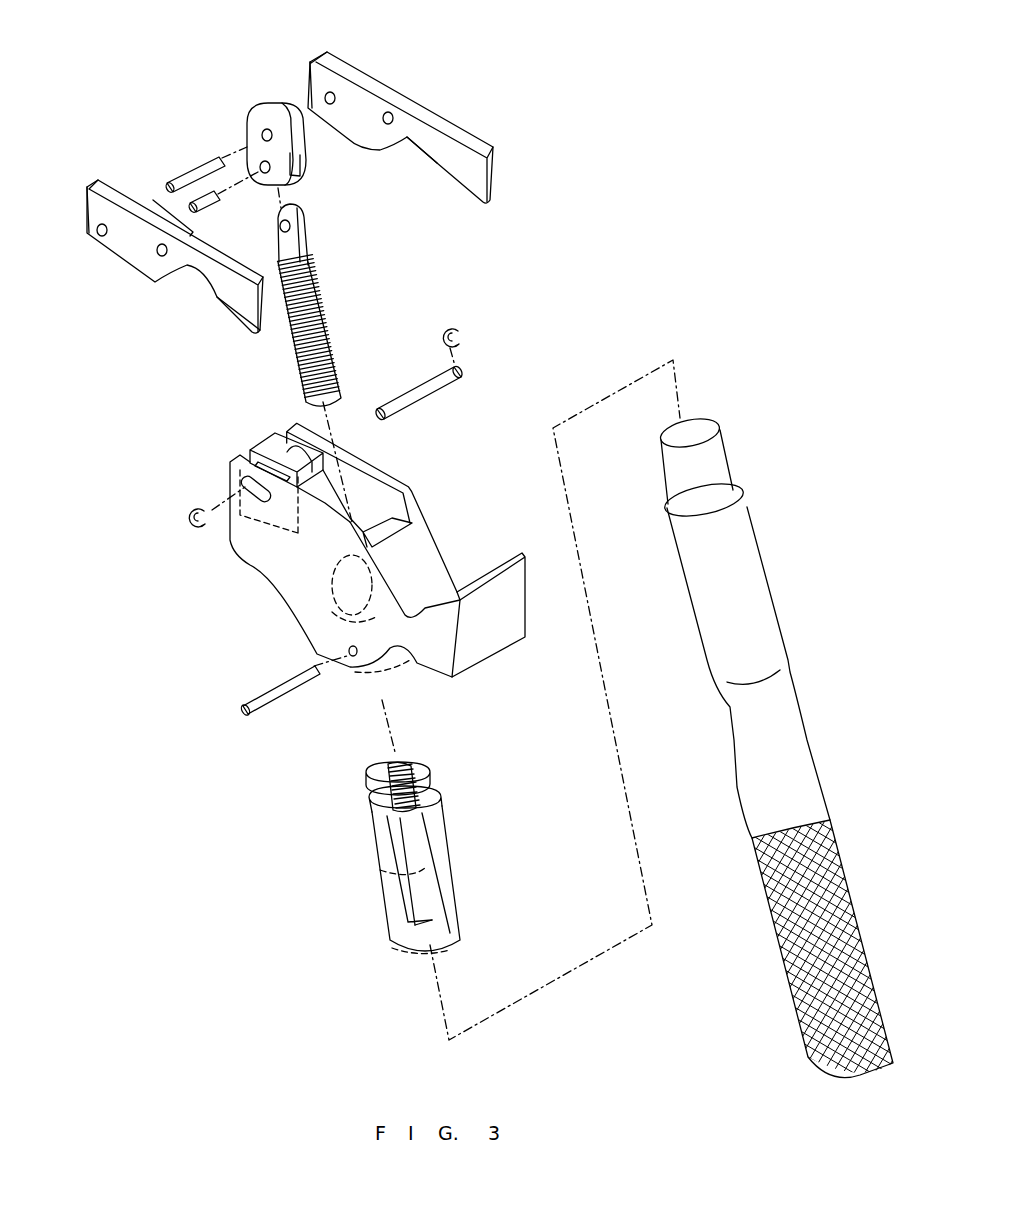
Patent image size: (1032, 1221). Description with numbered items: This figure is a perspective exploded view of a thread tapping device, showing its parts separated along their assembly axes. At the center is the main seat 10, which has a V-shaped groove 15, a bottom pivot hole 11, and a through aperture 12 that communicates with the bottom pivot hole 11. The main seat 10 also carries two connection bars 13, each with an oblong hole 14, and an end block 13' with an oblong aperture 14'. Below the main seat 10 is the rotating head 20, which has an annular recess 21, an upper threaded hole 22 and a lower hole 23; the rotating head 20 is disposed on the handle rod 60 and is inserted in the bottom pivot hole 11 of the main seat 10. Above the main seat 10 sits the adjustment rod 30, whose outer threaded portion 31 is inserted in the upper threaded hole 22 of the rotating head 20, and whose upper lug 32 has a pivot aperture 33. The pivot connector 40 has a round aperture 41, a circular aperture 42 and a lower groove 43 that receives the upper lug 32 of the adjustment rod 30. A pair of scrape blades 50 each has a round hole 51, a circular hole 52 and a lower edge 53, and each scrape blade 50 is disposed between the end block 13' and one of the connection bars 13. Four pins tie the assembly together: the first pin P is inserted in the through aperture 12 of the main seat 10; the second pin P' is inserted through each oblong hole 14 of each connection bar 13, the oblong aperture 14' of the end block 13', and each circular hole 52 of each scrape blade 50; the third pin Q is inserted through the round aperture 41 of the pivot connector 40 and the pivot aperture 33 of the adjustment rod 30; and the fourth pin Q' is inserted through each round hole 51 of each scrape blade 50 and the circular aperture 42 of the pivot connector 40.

The main seat 10 is at (353, 546).
The bottom pivot hole 11 is at (370, 626).
The through aperture 12 is at (352, 658).
The connection bars 13 is at (319, 497).
The end block 13' is at (277, 443).
The oblong hole 14 is at (246, 449).
The oblong aperture 14' is at (247, 450).
The V-shaped groove 15 is at (435, 582).
The rotating head 20 is at (435, 852).
The annular recess 21 is at (437, 790).
The upper threaded hole 22 is at (400, 768).
The lower hole 23 is at (417, 925).
The adjustment rod 30 is at (306, 305).
The outer threaded portion 31 is at (327, 342).
The upper lug 32 is at (308, 240).
The pivot aperture 33 is at (280, 227).
The pivot connector 40 is at (277, 106).
The round aperture 41 is at (263, 174).
The circular aperture 42 is at (262, 134).
The lower groove 43 is at (293, 180).
The scrape blades 50 is at (372, 82).
The round hole 51 is at (388, 124).
The circular hole 52 is at (331, 102).
The lower edge 53 is at (480, 200).
The handle rod 60 is at (718, 634).
The first pin P is at (272, 691).
The second pin P' is at (419, 381).
The third pin Q is at (204, 215).
The fourth pin Q' is at (195, 161).